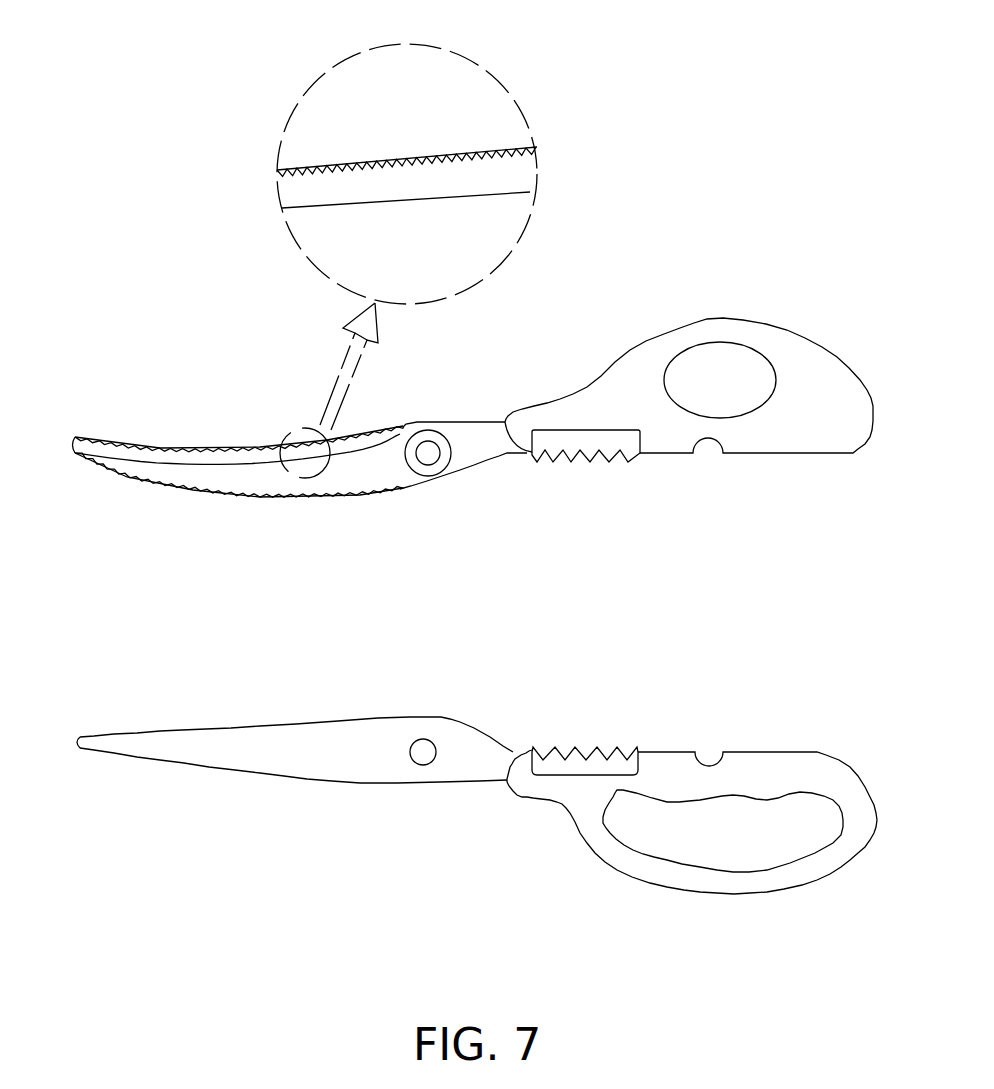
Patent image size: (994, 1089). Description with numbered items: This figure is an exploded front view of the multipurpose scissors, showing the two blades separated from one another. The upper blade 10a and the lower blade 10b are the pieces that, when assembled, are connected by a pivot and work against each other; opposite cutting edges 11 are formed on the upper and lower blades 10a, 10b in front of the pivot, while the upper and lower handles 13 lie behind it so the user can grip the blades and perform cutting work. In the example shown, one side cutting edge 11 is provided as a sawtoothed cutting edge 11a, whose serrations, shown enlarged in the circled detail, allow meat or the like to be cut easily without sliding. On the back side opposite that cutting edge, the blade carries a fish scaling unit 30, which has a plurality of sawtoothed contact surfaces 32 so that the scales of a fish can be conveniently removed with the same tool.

The upper blade 10a is at (305, 757).
The lower blade 10b is at (260, 477).
The cutting edge 11 is at (152, 448).
The sawtoothed cutting edge 11a is at (460, 148).
The handle 13 is at (730, 330).
The fish scaling unit 30 is at (220, 425).
The sawtoothed contact surfaces 32 is at (307, 498).